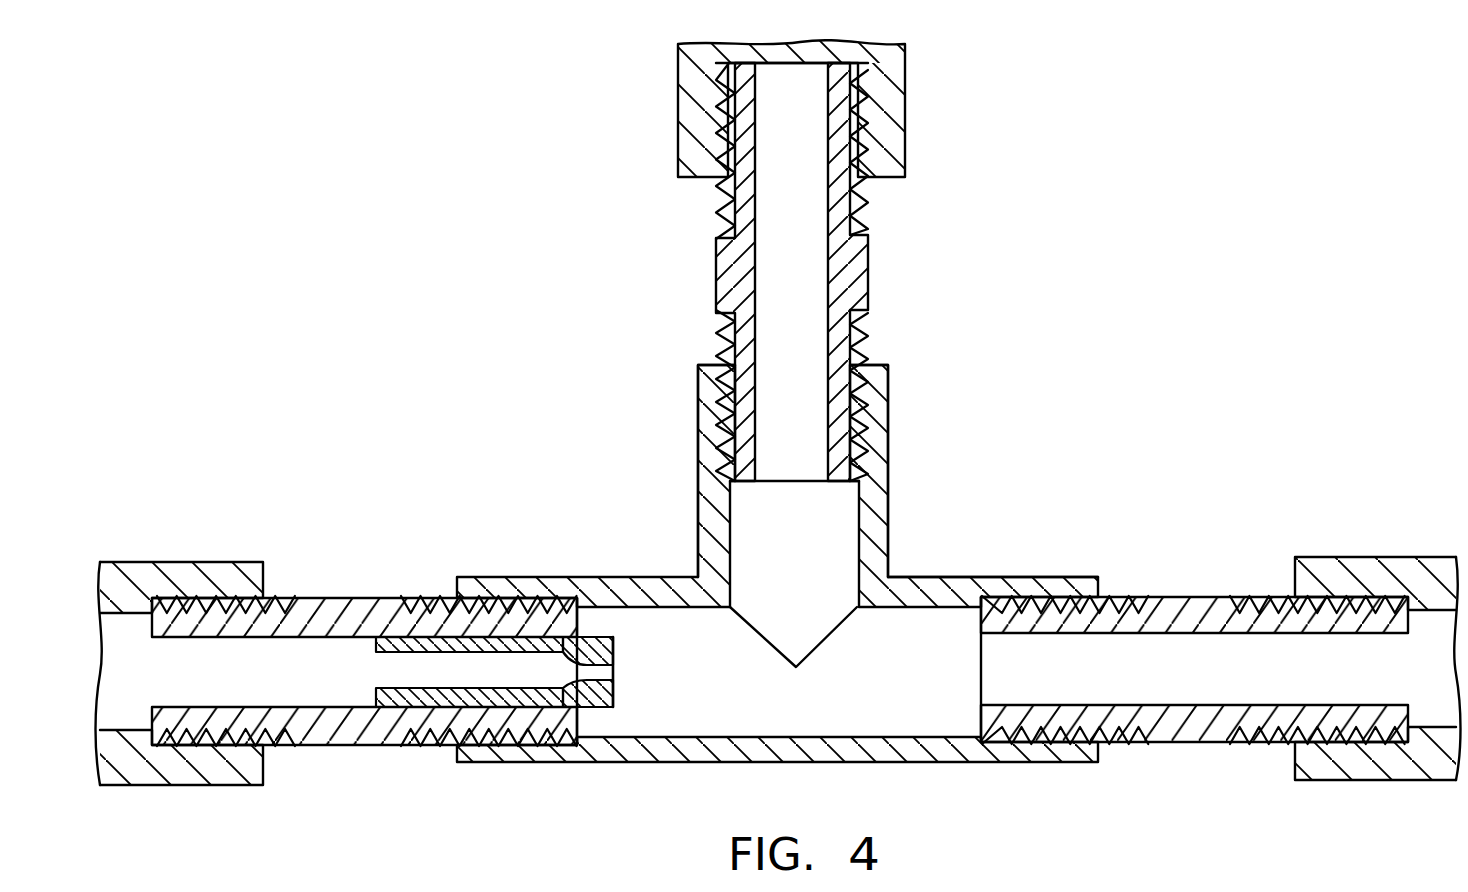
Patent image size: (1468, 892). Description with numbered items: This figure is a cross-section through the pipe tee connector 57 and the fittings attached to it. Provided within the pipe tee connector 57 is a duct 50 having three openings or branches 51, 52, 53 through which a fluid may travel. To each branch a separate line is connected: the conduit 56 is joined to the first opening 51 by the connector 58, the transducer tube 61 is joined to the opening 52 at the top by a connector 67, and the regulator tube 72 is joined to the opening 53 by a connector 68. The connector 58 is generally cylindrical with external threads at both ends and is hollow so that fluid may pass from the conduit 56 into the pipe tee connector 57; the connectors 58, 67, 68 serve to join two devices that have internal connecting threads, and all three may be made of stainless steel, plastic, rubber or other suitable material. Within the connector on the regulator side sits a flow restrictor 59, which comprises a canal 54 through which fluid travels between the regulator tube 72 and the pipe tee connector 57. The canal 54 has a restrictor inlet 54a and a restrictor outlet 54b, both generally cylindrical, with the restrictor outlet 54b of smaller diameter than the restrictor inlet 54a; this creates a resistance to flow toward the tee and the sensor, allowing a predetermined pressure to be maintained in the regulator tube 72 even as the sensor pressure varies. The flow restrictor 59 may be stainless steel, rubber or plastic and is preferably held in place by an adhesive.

The duct 50 is at (861, 675).
The opening 51 is at (1106, 588).
The opening 52 is at (869, 357).
The opening 53 is at (452, 598).
The canal 54 is at (489, 669).
The restrictor inlet 54a is at (378, 666).
The restrictor outlet 54b is at (642, 669).
The conduit 56 is at (1335, 782).
The pipe tee connector 57 is at (931, 576).
The connector 58 is at (1215, 744).
The flow restrictor 59 is at (615, 652).
The transducer tube 61 is at (906, 85).
The connector 67 is at (716, 250).
The connector 68 is at (352, 747).
The regulator tube 72 is at (203, 787).